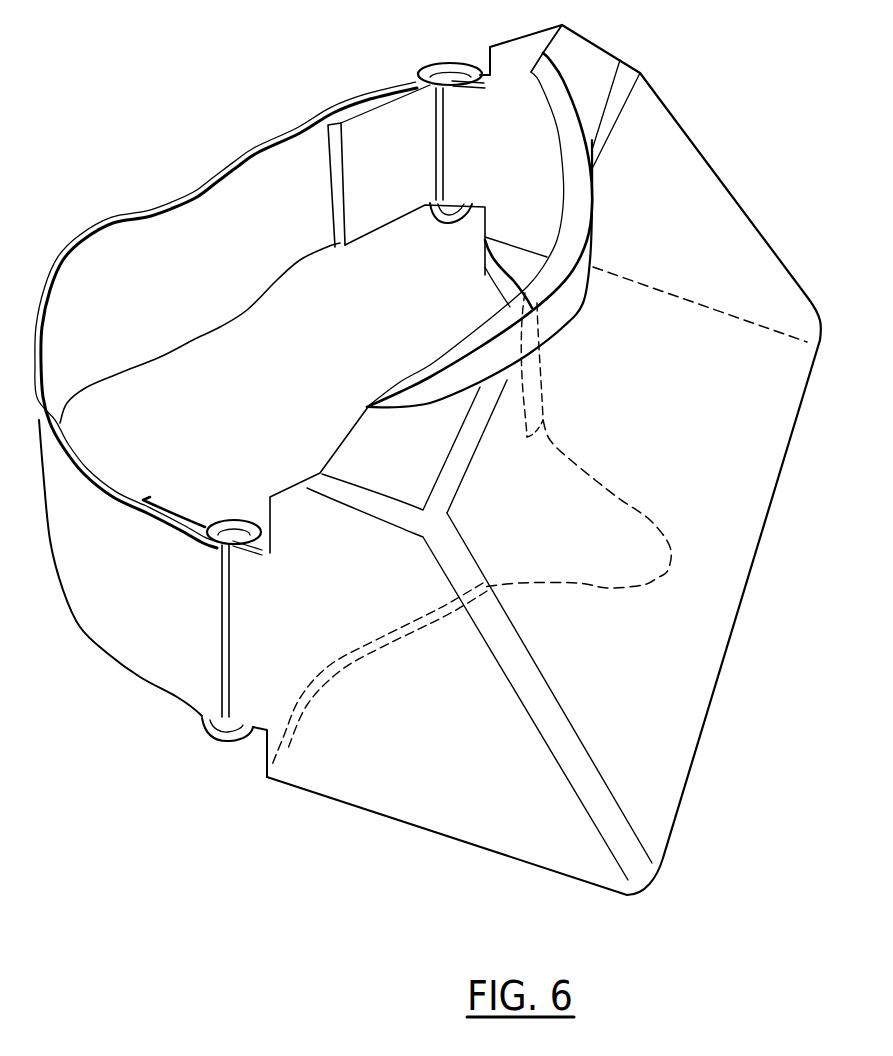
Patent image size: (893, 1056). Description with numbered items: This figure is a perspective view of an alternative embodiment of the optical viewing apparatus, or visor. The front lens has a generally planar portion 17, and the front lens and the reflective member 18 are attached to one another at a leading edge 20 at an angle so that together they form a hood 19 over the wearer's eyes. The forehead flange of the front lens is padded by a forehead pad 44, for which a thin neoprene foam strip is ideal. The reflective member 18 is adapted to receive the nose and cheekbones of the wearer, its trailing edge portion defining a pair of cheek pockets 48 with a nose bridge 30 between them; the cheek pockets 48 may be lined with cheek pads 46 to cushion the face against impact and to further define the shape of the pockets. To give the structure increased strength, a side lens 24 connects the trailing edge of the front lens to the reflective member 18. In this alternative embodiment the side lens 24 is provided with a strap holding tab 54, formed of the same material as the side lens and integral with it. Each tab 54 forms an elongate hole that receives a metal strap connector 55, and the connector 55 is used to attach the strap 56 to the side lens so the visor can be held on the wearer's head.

The generally planar portion 17 is at (767, 417).
The reflective member 18 is at (503, 248).
The hood 19 is at (737, 675).
The leading edge 20 is at (700, 737).
The right side lens 24 is at (447, 820).
The nose bridge 30 is at (570, 465).
The forehead pad 44 is at (565, 120).
The cheek pads 46 is at (490, 268).
The cheek pockets 48 is at (493, 297).
The strap holding tab 54 is at (460, 102).
The metal strap connector 55 is at (226, 740).
The strap 56 is at (133, 253).